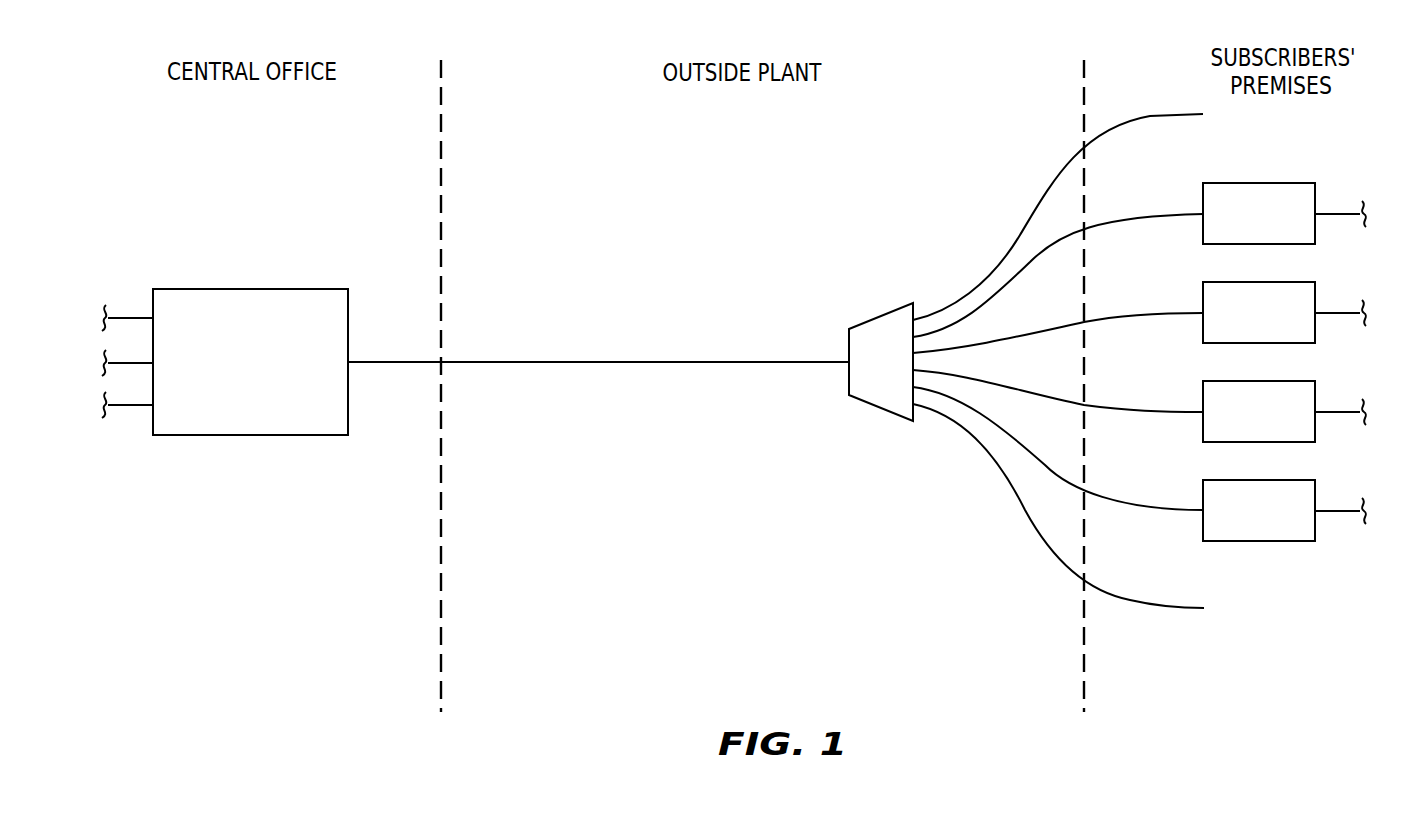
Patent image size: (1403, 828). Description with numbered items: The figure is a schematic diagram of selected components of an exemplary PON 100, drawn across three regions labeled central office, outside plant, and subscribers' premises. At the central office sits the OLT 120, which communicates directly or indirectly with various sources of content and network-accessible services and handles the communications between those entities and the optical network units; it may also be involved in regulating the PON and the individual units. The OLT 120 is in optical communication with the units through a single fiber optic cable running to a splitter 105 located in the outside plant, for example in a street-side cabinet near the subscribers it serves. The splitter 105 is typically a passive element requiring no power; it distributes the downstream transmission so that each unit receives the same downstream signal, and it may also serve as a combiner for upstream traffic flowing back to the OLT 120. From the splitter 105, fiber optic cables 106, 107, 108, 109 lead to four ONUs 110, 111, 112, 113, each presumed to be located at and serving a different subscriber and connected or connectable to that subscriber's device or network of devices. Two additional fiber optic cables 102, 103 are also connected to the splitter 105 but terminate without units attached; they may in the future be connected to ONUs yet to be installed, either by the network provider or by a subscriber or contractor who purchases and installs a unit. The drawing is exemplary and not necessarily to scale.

The PON 100 is at (954, 58).
The fiber optic cable 102 is at (1138, 116).
The fiber optic cable 103 is at (1138, 603).
The splitter 105 is at (881, 317).
The fiber optic cable 106 is at (1138, 214).
The fiber optic cable 107 is at (1138, 313).
The fiber optic cable 108 is at (1138, 409).
The fiber optic cable 109 is at (1138, 507).
The ONU 110 is at (1315, 193).
The ONU 111 is at (1315, 292).
The ONU 112 is at (1315, 391).
The ONU 113 is at (1315, 490).
The OLT 120 is at (252, 289).